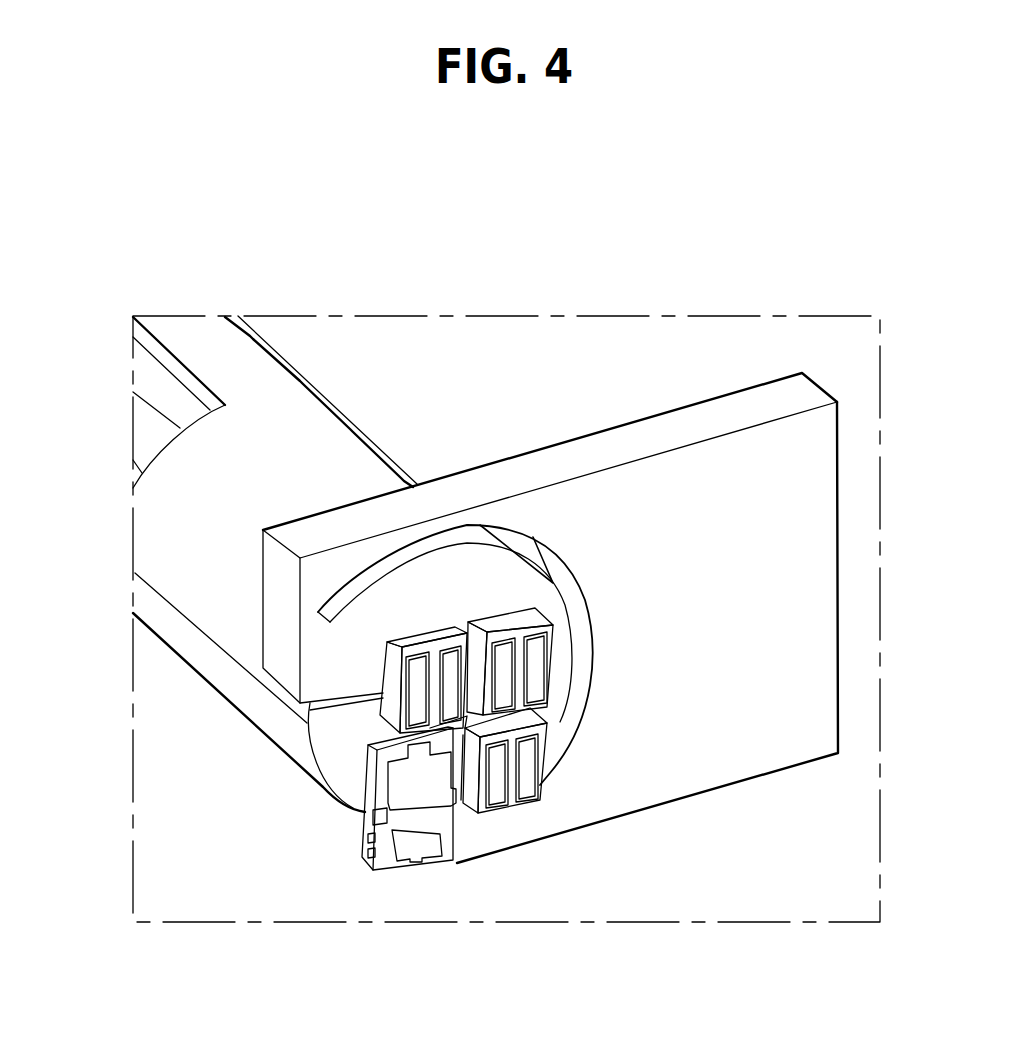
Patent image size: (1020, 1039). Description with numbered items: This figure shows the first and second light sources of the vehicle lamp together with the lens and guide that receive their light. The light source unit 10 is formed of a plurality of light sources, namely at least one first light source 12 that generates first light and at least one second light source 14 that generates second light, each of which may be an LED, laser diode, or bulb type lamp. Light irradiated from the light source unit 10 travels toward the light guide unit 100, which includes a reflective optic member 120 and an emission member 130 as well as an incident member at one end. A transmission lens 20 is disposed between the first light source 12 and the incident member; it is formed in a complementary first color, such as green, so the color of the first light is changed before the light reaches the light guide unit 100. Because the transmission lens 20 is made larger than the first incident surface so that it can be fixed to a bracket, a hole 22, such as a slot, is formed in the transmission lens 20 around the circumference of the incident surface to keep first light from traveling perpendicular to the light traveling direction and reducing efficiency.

The light source unit 10 is at (403, 977).
The first light source 12 is at (497, 695).
The second light source 14 is at (412, 800).
The transmission lens 20 is at (815, 577).
The hole 22 is at (522, 546).
The light guide unit 100 is at (157, 378).
The reflective optic member 120 is at (263, 340).
The emission member 130 is at (155, 542).